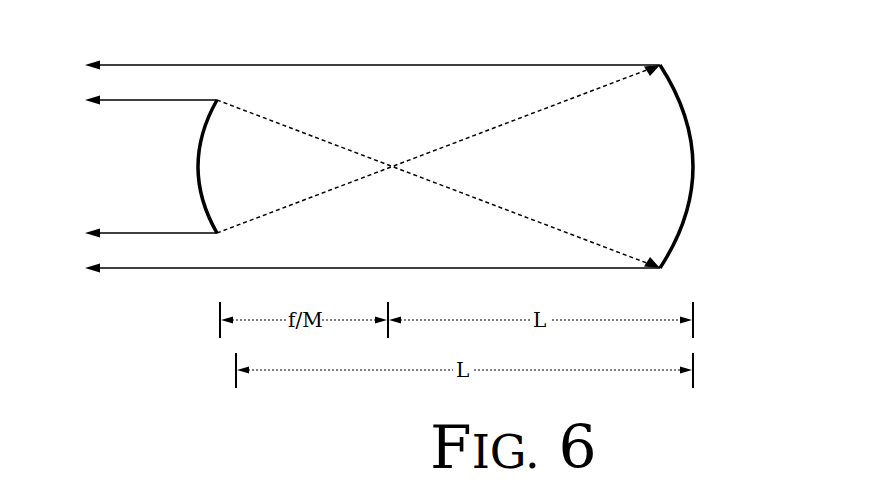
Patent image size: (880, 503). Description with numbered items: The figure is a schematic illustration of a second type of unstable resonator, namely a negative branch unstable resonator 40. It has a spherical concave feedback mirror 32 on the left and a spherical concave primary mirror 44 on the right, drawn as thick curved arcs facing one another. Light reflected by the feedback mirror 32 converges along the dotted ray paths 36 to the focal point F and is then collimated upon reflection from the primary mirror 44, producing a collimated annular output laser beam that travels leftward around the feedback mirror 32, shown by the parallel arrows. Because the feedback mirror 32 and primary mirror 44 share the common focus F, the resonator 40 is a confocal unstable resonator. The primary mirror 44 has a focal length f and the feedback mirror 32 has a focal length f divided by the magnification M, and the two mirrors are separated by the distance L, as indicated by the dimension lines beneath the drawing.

The negative branch unstable resonator 40 is at (618, 30).
The feedback mirror 32 is at (203, 160).
The primary mirror 44 is at (691, 127).
The converging ray paths 36 is at (497, 130).